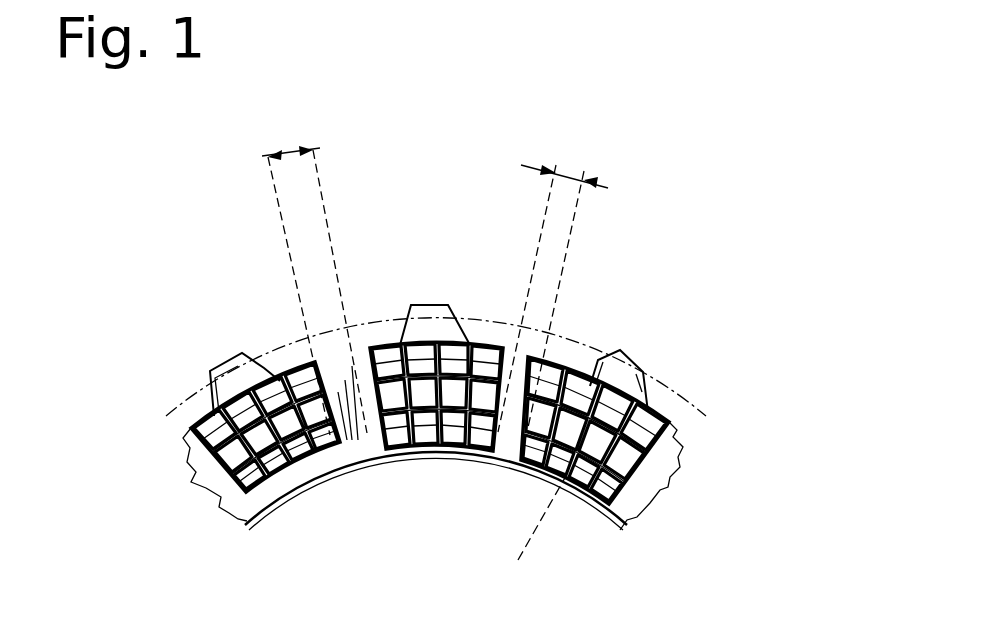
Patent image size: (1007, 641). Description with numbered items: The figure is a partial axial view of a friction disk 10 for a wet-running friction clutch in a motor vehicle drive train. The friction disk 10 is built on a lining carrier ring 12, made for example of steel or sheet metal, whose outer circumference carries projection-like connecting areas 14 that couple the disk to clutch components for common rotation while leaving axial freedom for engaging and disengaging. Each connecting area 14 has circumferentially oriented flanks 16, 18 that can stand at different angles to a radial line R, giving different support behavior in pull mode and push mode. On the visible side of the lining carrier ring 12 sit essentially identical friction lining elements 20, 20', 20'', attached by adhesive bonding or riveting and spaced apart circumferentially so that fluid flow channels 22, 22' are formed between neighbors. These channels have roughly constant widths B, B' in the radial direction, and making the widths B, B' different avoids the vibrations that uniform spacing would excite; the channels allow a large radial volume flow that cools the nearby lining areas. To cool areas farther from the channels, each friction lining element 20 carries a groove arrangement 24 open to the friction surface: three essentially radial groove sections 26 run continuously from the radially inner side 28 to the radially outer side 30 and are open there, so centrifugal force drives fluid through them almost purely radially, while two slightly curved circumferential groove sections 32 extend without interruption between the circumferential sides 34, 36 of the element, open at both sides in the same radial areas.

The friction disk 10 is at (692, 282).
The lining carrier ring 12 is at (680, 473).
The connecting areas 14 is at (640, 362).
The flank 16 is at (595, 355).
The flank 18 is at (647, 398).
The friction lining element 20 is at (271, 471).
The friction lining element 20' is at (436, 424).
The friction lining element 20'' is at (617, 488).
The fluid flow channel 22 is at (340, 522).
The fluid flow channel 22' is at (531, 509).
The groove arrangement 24 is at (433, 322).
The radial groove section 26 is at (205, 422).
The radially inner side 28 is at (322, 488).
The radially outer side 30 is at (218, 404).
The circumferential groove section 32 is at (196, 473).
The circumferential side 34 is at (202, 484).
The circumferential side 36 is at (334, 428).
The channel width B is at (314, 249).
The channel width B' is at (567, 262).
The radial line R is at (543, 512).